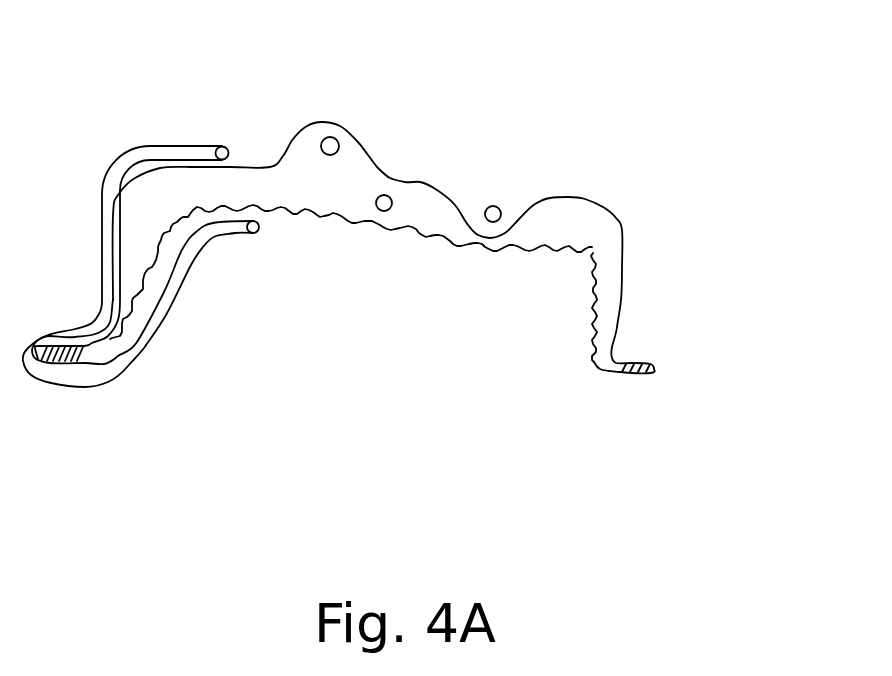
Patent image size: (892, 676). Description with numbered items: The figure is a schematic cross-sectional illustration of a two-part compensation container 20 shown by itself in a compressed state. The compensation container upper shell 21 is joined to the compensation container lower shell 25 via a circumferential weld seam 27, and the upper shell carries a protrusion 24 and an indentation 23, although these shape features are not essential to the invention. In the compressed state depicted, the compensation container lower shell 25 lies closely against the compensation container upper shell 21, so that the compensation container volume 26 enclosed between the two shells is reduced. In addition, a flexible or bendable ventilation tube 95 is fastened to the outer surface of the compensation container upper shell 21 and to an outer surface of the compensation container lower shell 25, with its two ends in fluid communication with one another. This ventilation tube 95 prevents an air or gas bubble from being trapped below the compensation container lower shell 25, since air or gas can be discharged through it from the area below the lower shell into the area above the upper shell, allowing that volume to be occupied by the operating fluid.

The compensation container 20 is at (688, 98).
The compensation container upper shell 21 is at (622, 260).
The indentation 23 is at (493, 214).
The protrusion 24 is at (330, 146).
The compensation container lower shell 25 is at (532, 250).
The compensation container volume 26 is at (385, 205).
The circumferential weld seam 27 is at (68, 358).
The ventilation tube 95 is at (130, 164).